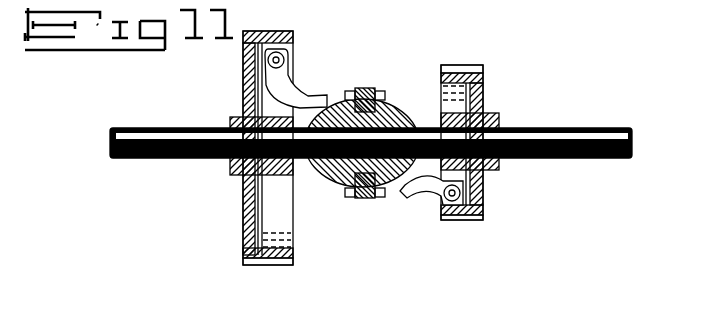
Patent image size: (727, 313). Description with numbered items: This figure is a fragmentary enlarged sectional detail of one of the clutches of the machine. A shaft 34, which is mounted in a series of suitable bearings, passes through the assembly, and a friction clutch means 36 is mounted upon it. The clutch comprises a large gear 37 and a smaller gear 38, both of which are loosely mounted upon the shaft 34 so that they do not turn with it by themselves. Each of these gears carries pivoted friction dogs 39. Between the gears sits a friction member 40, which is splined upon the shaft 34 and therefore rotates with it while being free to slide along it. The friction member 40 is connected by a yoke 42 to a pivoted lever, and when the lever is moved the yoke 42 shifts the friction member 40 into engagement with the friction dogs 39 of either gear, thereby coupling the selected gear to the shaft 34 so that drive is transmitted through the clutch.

The shaft 34 is at (160, 131).
The friction clutch means 36 is at (365, 198).
The large gear 37 is at (272, 263).
The smaller gear 38 is at (458, 220).
The friction dogs 39 is at (296, 86).
The friction member 40 is at (393, 100).
The yoke 42 is at (378, 86).